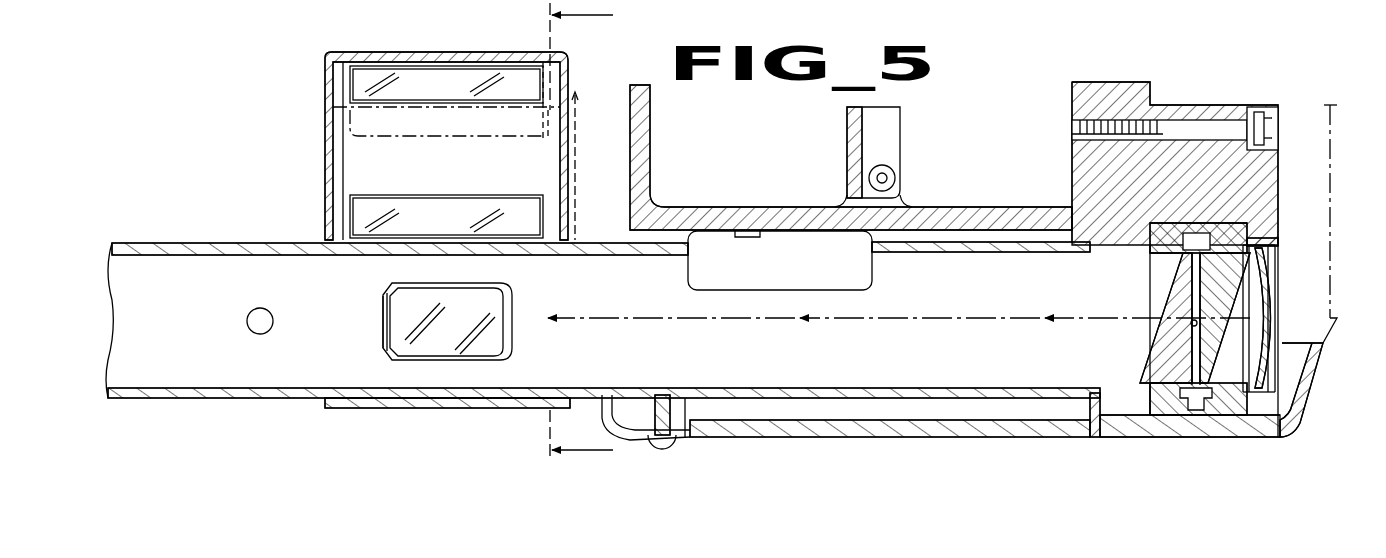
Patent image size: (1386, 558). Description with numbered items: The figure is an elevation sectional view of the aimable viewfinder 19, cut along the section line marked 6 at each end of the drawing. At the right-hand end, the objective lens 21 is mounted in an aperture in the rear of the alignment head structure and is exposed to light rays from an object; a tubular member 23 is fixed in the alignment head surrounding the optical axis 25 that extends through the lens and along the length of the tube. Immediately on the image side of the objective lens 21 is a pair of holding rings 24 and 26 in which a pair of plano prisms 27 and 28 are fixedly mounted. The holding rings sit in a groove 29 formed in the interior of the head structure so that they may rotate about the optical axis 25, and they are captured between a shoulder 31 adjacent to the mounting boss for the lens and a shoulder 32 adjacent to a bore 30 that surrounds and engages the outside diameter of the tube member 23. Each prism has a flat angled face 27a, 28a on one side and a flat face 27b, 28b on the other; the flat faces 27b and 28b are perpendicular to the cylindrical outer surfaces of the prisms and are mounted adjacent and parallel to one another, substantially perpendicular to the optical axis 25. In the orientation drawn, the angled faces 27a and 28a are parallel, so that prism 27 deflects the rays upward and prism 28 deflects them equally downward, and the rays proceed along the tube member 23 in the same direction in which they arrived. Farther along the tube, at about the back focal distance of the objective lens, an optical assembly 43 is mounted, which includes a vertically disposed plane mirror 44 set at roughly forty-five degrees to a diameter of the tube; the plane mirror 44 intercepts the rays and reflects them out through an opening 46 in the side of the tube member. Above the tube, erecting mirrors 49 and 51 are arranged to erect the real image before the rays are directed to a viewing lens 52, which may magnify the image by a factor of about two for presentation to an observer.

The aimable viewfinder 19 is at (205, 222).
The objective lens 21 is at (1258, 268).
The tubular member 23 is at (872, 248).
The holding ring 24 is at (1258, 245).
The optical axis 25 is at (990, 318).
The holding ring 26 is at (1190, 245).
The plano prism 27 is at (1214, 248).
The angled face 27a is at (1233, 311).
The flat face 27b is at (1200, 347).
The plano prism 28 is at (1171, 318).
The angled face 28a is at (1176, 303).
The flat face 28b is at (1194, 328).
The groove 29 is at (1190, 412).
The bore 30 is at (1092, 246).
The shoulder 31 is at (1268, 240).
The shoulder 32 is at (1152, 254).
The optical assembly 43 is at (360, 173).
The plane mirror 44 is at (440, 322).
The opening 46 is at (512, 296).
The erecting mirror 49 is at (360, 83).
The erecting mirror 51 is at (360, 221).
The viewing lens 52 is at (333, 118).
The section line 6- 6 is at (566, 235).